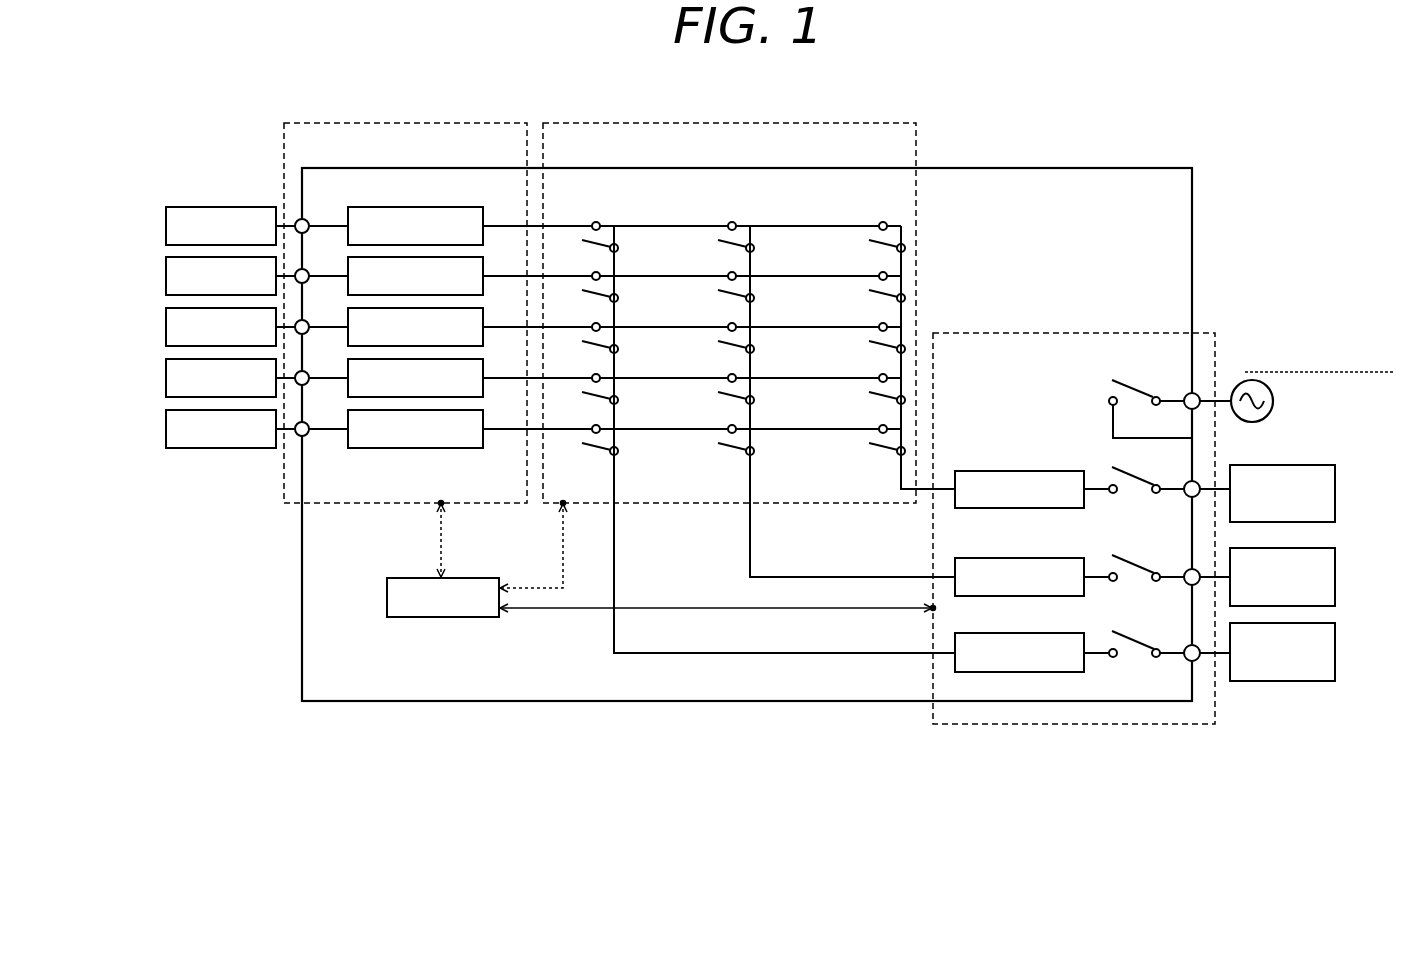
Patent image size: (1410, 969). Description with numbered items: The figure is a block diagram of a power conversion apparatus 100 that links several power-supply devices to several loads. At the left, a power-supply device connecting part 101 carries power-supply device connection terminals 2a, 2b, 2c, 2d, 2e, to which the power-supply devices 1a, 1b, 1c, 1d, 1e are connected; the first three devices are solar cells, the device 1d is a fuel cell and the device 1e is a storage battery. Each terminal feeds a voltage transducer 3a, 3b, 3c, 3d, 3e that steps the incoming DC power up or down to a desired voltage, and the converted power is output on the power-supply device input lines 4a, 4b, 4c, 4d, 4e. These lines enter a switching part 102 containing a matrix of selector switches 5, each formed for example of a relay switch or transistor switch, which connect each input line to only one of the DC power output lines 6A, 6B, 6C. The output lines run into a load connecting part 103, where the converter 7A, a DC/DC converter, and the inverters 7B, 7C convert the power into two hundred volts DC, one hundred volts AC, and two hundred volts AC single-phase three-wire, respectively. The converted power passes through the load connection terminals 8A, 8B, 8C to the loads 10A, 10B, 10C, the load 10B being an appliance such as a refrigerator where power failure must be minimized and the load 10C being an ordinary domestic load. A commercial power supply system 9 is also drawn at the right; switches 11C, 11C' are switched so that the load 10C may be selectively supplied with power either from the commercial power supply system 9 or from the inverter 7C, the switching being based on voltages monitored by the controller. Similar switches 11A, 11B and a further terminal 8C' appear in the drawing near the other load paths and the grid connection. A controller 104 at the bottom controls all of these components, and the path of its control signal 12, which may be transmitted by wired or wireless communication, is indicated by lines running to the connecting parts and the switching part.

The power-supply device 1a is at (170, 211).
The power-supply device 1b is at (170, 261).
The power-supply device 1c is at (170, 312).
The power-supply device 1d is at (170, 363).
The power-supply device 1e is at (170, 414).
The power-supply device connection terminal 2a is at (308, 221).
The power-supply device connection terminal 2b is at (308, 271).
The power-supply device connection terminal 2c is at (308, 322).
The power-supply device connection terminal 2d is at (308, 373).
The power-supply device connection terminal 2e is at (308, 424).
The voltage transducer 3a is at (478, 210).
The voltage transducer 3b is at (478, 260).
The voltage transducer 3c is at (478, 311).
The voltage transducer 3d is at (478, 362).
The voltage transducer 3e is at (478, 413).
The power-supply device input line 4a is at (792, 226).
The power-supply device input line 4b is at (792, 276).
The power-supply device input line 4c is at (792, 327).
The power-supply device input line 4d is at (792, 378).
The power-supply device input line 4e is at (792, 429).
The selector switch 5 is at (592, 244).
The DC power output line 6A is at (614, 533).
The DC power output line 6B is at (750, 533).
The DC power output line 6C is at (916, 503).
The converter 7A is at (980, 633).
The inverter 7B is at (980, 558).
The inverter 7C is at (980, 471).
The load connection terminal 8A is at (1184, 648).
The load connection terminal 8B is at (1184, 572).
The load connection terminal 8C is at (1179, 471).
The grid connecting terminal 8C' is at (1189, 375).
The commercial power supply system 9 is at (1273, 395).
The load 10A is at (1335, 654).
The load 10B is at (1335, 578).
The load 10C is at (1335, 490).
The load switch 11A is at (1130, 643).
The load switch 11B is at (1130, 567).
The switch 11C is at (1146, 496).
The switch 11C' is at (1139, 390).
The control signal 12 is at (441, 542).
The power conversion apparatus 100 is at (1108, 168).
The power-supply device connecting part 101 is at (328, 123).
The switching part 102 is at (582, 123).
The load connecting part 103 is at (988, 333).
The controller 104 is at (413, 617).